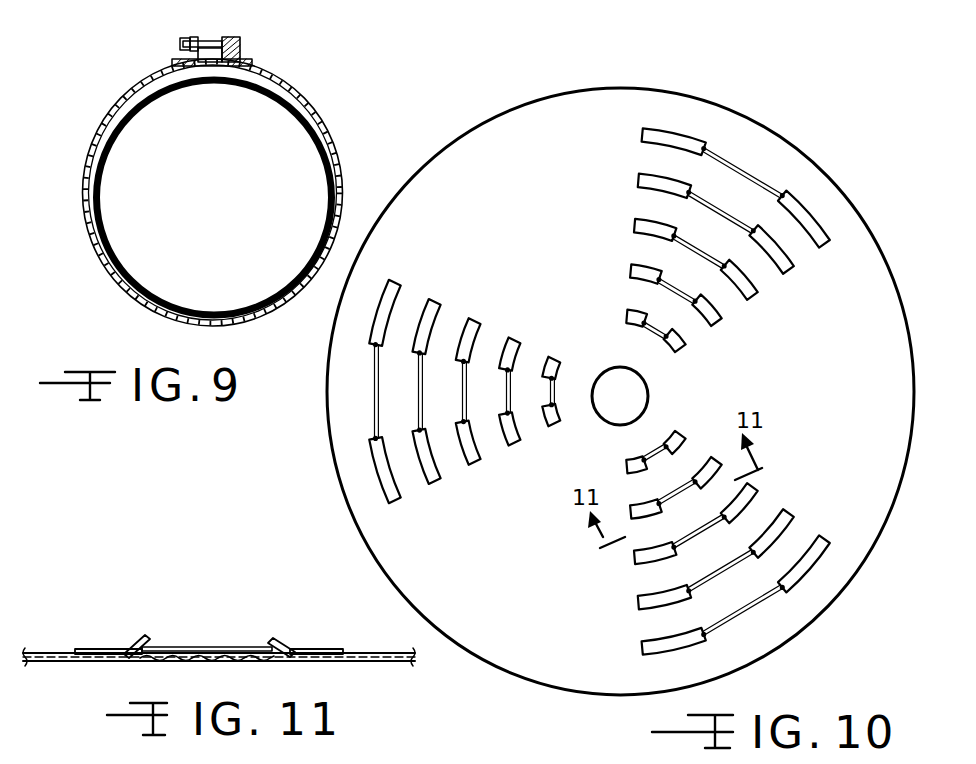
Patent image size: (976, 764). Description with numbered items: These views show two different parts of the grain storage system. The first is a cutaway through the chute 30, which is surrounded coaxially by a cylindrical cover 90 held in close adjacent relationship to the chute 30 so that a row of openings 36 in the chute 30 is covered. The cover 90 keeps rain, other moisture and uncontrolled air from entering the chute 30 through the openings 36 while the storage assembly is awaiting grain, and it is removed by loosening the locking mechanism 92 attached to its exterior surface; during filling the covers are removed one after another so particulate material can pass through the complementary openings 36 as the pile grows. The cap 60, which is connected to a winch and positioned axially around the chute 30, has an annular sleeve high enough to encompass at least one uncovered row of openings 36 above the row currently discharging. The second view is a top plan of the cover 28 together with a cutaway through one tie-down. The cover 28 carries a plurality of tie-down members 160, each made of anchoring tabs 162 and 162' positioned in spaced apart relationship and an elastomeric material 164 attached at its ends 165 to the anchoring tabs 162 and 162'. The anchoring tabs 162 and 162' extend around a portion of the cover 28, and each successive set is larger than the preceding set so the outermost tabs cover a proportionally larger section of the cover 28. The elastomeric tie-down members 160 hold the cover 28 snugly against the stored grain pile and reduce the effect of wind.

In FIG. 10, the cover 28 is at (518, 107).
In FIG. 11, the cover 28 is at (171, 663).
In FIG. 9, the chute 30 is at (182, 311).
In FIG. 9, the openings 36 is at (99, 168).
In FIG. 10, the cap 60 is at (608, 369).
In FIG. 9, the cylindrical cover 90 is at (323, 126).
In FIG. 9, the locking mechanism 92 is at (235, 36).
In FIG. 10, the tie-down members 160 is at (651, 223).
In FIG. 10, the anchoring tab 162 is at (635, 678).
In FIG. 11, the anchoring tab 162 is at (104, 614).
In FIG. 10, the anchoring tab 162' is at (851, 579).
In FIG. 11, the anchoring tab 162' is at (335, 629).
In FIG. 10, the elastomeric material 164 is at (748, 618).
In FIG. 11, the elastomeric material 164 is at (210, 645).
In FIG. 11, the ends 165 is at (130, 640).